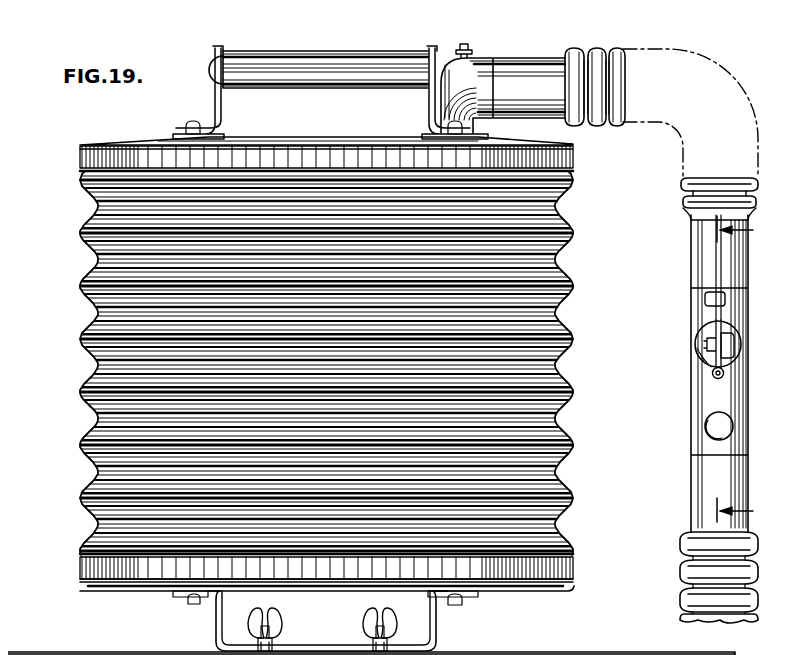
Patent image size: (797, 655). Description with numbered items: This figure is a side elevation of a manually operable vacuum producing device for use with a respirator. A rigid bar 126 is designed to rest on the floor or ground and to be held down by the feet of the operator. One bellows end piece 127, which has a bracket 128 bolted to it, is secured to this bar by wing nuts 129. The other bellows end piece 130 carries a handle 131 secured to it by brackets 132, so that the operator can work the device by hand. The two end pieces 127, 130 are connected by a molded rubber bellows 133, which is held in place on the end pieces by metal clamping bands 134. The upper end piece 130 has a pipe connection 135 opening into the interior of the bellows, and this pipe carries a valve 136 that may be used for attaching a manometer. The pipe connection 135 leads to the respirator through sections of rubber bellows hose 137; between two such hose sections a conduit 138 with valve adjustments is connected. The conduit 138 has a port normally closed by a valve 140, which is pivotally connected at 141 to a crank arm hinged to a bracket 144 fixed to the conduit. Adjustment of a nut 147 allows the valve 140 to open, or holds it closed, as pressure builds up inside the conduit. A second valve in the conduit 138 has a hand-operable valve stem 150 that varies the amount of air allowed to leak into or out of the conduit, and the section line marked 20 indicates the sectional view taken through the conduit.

The section line 20 is at (746, 369).
The rigid bar 126 is at (517, 645).
The bellows end piece 127 is at (481, 585).
The bracket 128 is at (427, 622).
The wing nuts 129 is at (356, 617).
The bellows end piece 130 is at (277, 136).
The handle 131 is at (323, 52).
The brackets 132 is at (207, 96).
The molded rubber bellows 133 is at (80, 342).
The metal clamping bands 134 is at (74, 150).
The pipe connection 135 is at (478, 60).
The valve 136 is at (457, 34).
The rubber bellows hose 137 is at (592, 42).
The conduit 138 is at (690, 300).
The valve 140 is at (727, 350).
The pivotal connection 141 is at (694, 345).
The bracket 144 is at (718, 290).
The nut 147 is at (704, 367).
The valve stem 150 is at (722, 420).